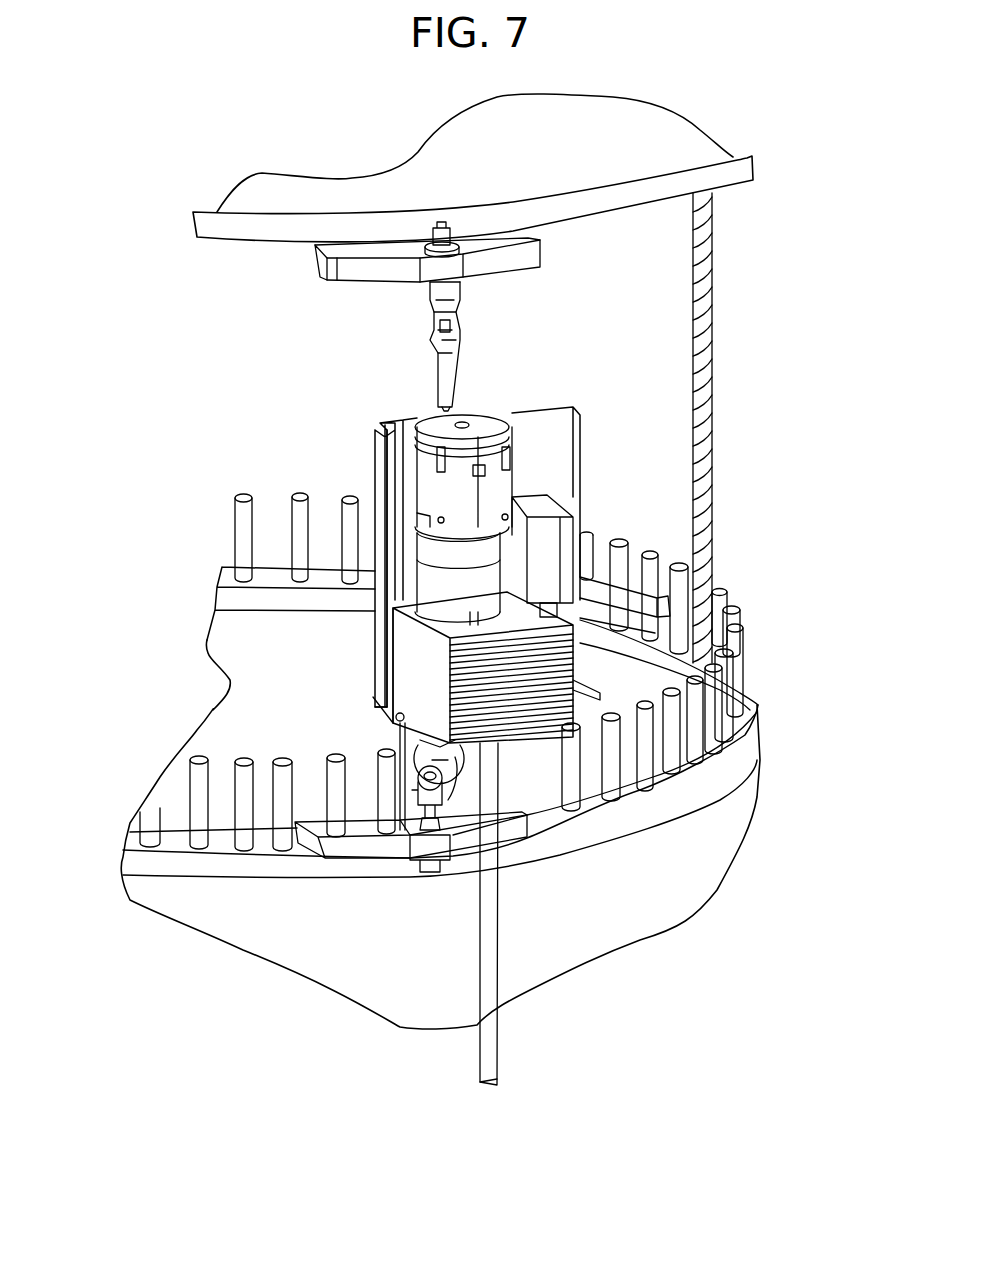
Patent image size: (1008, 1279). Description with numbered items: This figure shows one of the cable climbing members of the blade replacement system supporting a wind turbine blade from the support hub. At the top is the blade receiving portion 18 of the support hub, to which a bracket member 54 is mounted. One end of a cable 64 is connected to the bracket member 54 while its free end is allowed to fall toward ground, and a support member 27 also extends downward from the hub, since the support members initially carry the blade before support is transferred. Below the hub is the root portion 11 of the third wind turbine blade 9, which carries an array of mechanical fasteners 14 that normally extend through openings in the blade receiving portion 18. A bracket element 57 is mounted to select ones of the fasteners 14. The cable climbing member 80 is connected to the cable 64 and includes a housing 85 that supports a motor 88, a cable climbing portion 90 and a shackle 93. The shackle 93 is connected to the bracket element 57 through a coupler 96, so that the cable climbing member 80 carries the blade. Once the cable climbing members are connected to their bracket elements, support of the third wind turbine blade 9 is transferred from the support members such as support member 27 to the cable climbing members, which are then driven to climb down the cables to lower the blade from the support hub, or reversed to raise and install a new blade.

The blade receiving portion 18 is at (233, 220).
The bracket member 54 is at (340, 301).
The cable 64 is at (480, 361).
The support member 27 is at (719, 352).
The cable climbing member 80 is at (362, 429).
The motor 88 is at (493, 487).
The housing 85 is at (383, 603).
The cable climbing portion 90 is at (400, 680).
The coupler 96 is at (420, 747).
The shackle 93 is at (465, 757).
The mechanical fasteners 14 is at (277, 481).
The root portion 11 is at (708, 790).
The third wind turbine blade 9 is at (768, 746).
The bracket element 57 is at (348, 846).